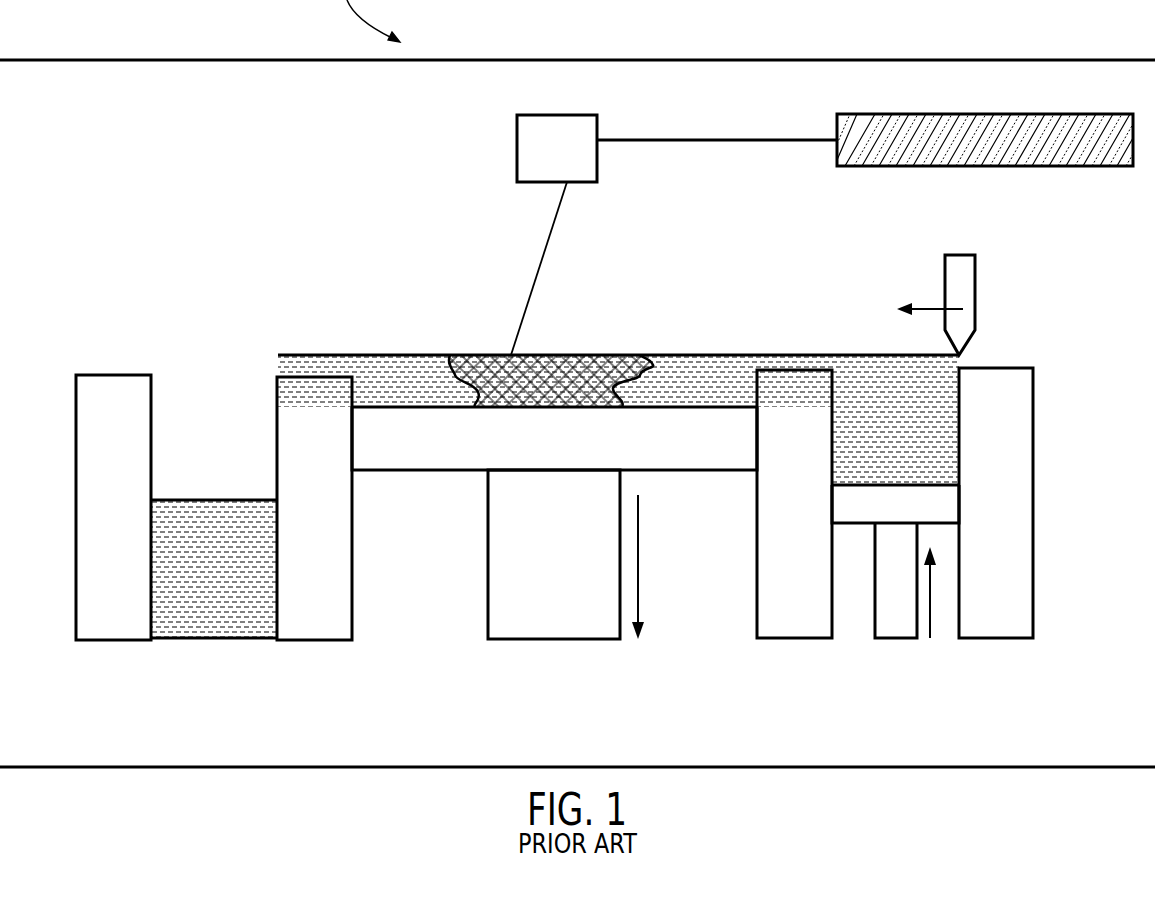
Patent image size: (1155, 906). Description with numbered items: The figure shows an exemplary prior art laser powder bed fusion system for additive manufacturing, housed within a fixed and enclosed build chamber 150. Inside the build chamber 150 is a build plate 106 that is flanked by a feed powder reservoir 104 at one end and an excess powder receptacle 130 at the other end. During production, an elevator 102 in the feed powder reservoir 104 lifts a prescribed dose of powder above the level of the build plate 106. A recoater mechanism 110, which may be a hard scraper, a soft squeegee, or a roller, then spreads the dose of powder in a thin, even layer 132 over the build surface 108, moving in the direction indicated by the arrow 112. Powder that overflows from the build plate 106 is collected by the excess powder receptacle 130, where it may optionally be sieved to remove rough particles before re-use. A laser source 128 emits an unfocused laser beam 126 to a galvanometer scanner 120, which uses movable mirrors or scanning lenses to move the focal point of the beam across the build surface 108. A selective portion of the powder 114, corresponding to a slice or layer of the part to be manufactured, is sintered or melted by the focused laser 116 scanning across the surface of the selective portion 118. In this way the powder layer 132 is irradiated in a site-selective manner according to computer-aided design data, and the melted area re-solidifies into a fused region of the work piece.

The elevator 102 is at (863, 513).
The feed powder reservoir 104 is at (900, 665).
The build plate 106 is at (697, 460).
The build surface 108 is at (410, 392).
The recoater mechanism 110 is at (962, 290).
The arrow 112 is at (928, 303).
The selective portion of the powder 114 is at (622, 370).
The focused laser 116 is at (552, 230).
The surface of the selective portion 118 is at (564, 343).
The galvanometer scanner 120 is at (567, 115).
The unfocused laser beam 126 is at (719, 140).
The laser source 128 is at (911, 114).
The excess powder receptacle 130 is at (212, 672).
The powder layer 132 is at (713, 365).
The build chamber 150 is at (1005, 58).